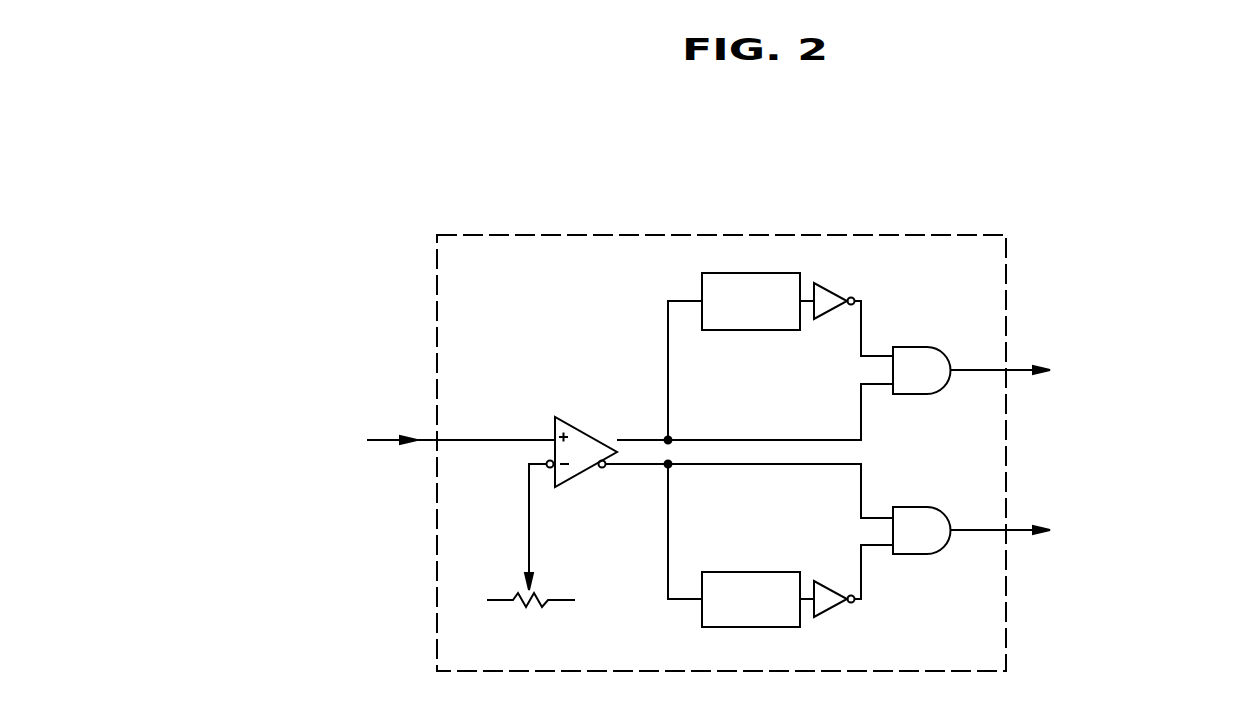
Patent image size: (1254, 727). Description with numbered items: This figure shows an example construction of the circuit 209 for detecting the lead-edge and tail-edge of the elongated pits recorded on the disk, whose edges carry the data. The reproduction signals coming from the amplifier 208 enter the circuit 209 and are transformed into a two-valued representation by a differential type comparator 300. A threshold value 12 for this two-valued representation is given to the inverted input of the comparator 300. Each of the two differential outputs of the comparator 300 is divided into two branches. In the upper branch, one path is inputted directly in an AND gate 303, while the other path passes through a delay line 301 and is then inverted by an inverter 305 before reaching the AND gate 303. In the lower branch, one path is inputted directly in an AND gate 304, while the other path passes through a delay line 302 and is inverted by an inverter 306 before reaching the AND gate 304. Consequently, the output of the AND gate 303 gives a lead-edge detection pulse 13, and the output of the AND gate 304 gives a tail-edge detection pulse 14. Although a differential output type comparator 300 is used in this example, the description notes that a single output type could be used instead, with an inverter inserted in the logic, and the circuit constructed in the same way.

The circuit for detecting lead-edge and tail-edge 209 is at (510, 235).
The amplifier 208 is at (383, 442).
The differential type comparator 300 is at (583, 427).
The threshold value 12 is at (524, 545).
The delay line 301 is at (755, 273).
The delay line 302 is at (767, 572).
The AND gate 303 is at (913, 347).
The AND gate 304 is at (918, 507).
The inverter 305 is at (829, 283).
The inverter 306 is at (830, 612).
The lead-edge detection pulse 13 is at (1023, 368).
The tail-edge detection pulse 14 is at (1024, 527).